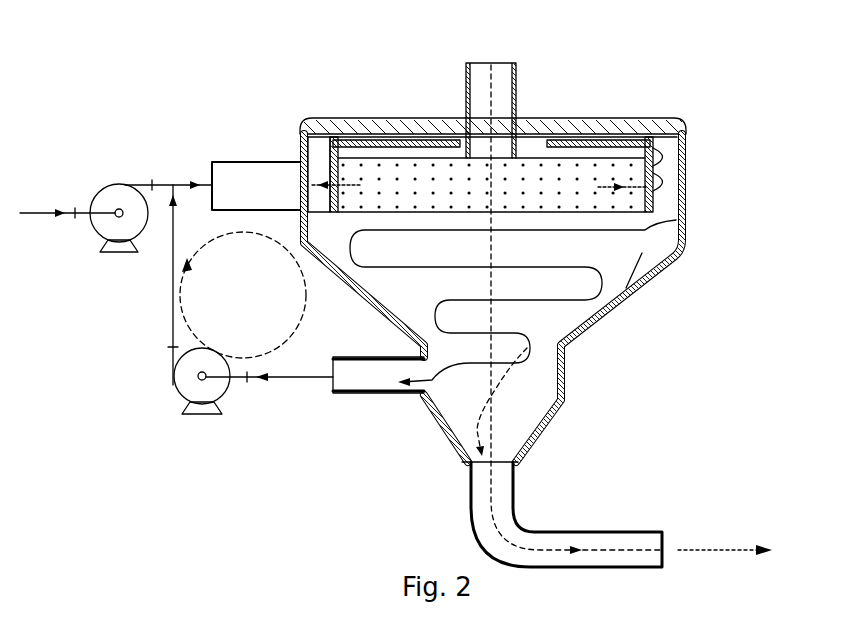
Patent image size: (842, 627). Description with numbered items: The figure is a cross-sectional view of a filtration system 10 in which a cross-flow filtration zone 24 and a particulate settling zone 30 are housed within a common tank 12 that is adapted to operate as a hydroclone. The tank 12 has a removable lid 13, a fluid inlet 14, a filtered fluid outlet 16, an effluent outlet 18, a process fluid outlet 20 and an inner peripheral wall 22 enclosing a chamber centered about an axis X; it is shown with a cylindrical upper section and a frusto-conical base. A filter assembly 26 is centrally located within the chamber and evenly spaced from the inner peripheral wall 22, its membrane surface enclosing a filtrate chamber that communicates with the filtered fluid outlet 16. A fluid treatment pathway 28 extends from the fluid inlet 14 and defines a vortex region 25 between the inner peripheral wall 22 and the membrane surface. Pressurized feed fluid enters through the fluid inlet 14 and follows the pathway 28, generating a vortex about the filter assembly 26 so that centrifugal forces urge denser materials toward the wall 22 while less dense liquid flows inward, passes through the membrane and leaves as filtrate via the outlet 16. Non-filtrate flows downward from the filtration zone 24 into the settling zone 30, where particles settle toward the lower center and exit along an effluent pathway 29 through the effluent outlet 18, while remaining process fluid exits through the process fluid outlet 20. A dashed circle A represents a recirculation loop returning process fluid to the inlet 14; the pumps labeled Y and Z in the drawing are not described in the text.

The system 10 is at (678, 57).
The tank 12 is at (582, 334).
The removable lid 13 is at (357, 128).
The fluid inlet 14 is at (241, 178).
The filtered fluid outlet 16 is at (517, 87).
The effluent outlet 18 is at (514, 495).
The process fluid outlet 20 is at (358, 398).
The inner peripheral wall 22 is at (628, 286).
The cross-flow filtration zone 24 is at (683, 142).
The vortex region 25 is at (317, 164).
The filter assembly 26 is at (592, 146).
The fluid treatment pathway 28 is at (618, 230).
The effluent pathway 29 is at (477, 420).
The particulate settling zone 30 is at (640, 250).
The axis X is at (491, 102).
The pump Y is at (98, 234).
The pump Z is at (180, 394).
The recirculation loop A is at (303, 313).